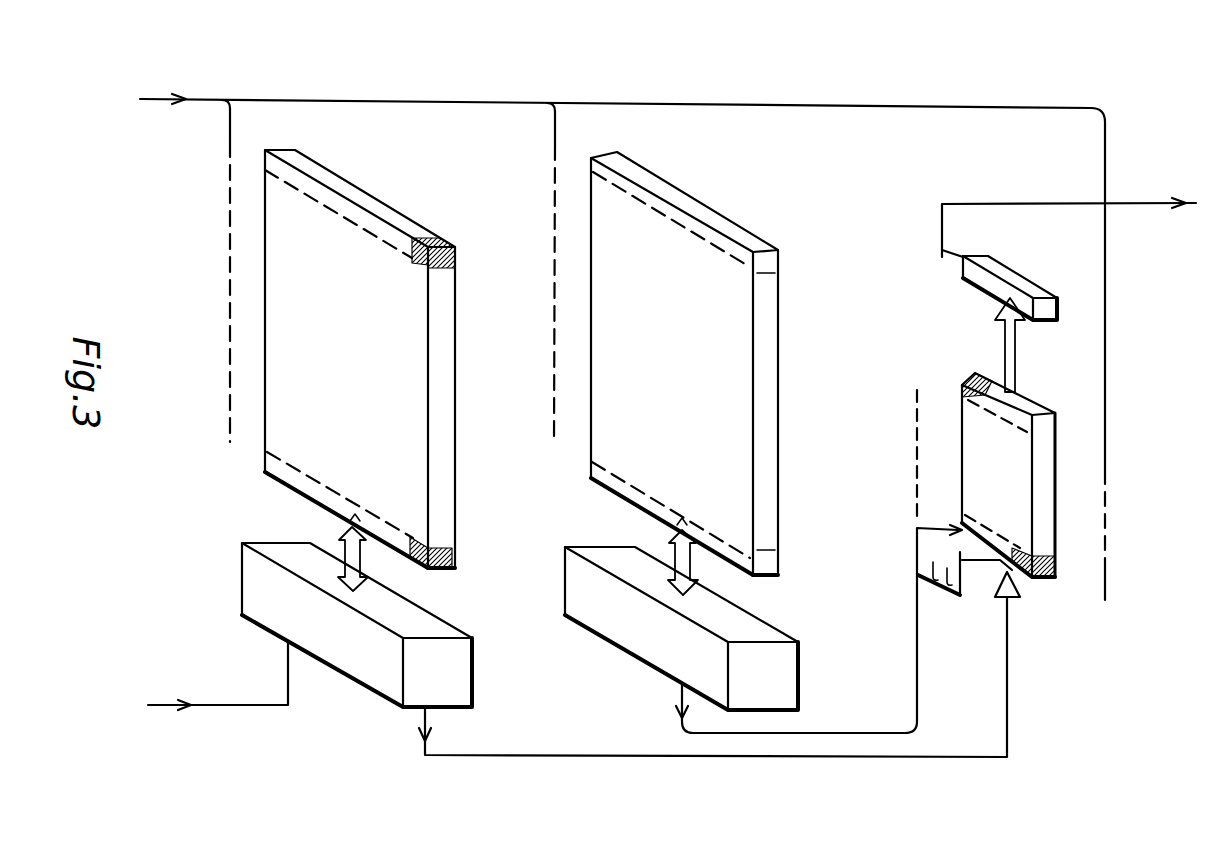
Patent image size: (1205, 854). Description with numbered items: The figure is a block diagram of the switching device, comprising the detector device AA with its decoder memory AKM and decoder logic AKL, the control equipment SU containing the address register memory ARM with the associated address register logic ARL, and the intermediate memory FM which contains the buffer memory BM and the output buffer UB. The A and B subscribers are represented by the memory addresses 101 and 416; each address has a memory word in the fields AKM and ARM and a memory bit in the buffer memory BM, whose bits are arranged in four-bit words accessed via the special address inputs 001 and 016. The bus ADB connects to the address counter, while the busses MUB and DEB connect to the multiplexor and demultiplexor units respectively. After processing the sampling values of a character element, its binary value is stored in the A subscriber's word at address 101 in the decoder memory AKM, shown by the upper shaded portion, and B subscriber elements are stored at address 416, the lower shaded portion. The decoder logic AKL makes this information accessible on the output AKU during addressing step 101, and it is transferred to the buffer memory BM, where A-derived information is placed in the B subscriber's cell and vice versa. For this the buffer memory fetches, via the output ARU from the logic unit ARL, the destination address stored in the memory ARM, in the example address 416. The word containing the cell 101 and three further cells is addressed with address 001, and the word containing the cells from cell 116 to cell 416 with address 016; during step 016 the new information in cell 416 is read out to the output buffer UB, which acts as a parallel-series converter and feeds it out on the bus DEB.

The memory address of A subscriber 101 is at (260, 159).
The memory address of B subscriber 416 is at (260, 460).
The memory cell of buffer memory 116 is at (944, 527).
The special address input of buffer memory 001 is at (1102, 457).
The special address input of buffer memory 016 is at (1102, 598).
The address bus ADB is at (185, 97).
The demultiplexor bus DEB is at (1182, 198).
The decoder memory AKM is at (455, 381).
The address register memory ARM is at (780, 382).
The decoder logic AKL is at (465, 666).
The address register logic ARL is at (790, 672).
The detector device AA is at (268, 543).
The control equipment SU is at (603, 547).
The multiplexor bus MUB is at (193, 702).
The output of decoder logic AKU is at (424, 746).
The output of address register logic ARU is at (678, 720).
The output buffer UB is at (1010, 272).
The intermediate memory FM is at (973, 377).
The buffer memory BM is at (1058, 516).